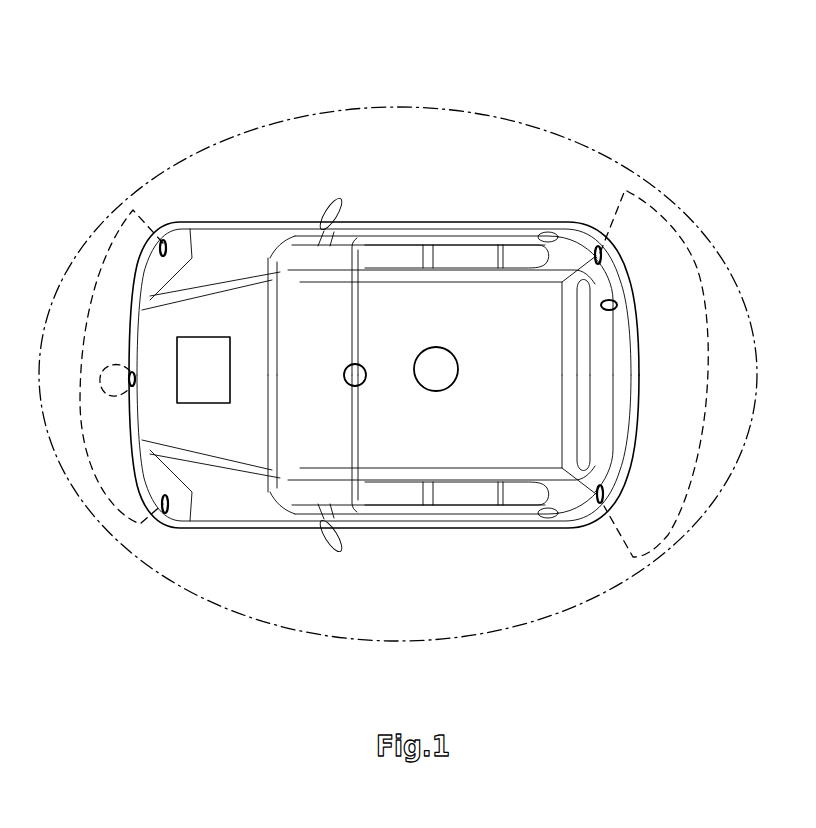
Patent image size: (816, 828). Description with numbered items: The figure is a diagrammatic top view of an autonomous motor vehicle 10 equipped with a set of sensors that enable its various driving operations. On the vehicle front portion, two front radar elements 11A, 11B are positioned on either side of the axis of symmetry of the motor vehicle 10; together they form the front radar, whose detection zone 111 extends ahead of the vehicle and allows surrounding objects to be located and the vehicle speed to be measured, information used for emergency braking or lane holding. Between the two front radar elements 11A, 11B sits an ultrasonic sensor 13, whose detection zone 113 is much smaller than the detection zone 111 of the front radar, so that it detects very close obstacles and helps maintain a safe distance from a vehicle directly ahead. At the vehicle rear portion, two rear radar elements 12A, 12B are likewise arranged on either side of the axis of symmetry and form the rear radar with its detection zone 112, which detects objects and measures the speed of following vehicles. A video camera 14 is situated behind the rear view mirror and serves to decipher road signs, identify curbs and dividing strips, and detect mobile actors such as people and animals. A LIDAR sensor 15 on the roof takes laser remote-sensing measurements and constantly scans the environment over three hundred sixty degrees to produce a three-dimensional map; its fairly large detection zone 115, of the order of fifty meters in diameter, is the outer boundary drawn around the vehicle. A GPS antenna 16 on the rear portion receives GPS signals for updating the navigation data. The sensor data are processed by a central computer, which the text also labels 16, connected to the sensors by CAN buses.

The motor vehicle 10 is at (218, 105).
The front radar element 11A is at (165, 240).
The front radar element 11B is at (165, 514).
The rear radar element 12A is at (597, 246).
The rear radar element 12B is at (598, 504).
The ultrasonic sensor 13 is at (135, 372).
The video camera 14 is at (358, 372).
The LIDAR sensor 15 is at (441, 362).
The GPS antenna 16 is at (617, 307).
The detection zone 111 is at (105, 230).
The detection zone 112 is at (681, 243).
The detection zone 113 is at (107, 360).
The detection zone 115 is at (510, 118).